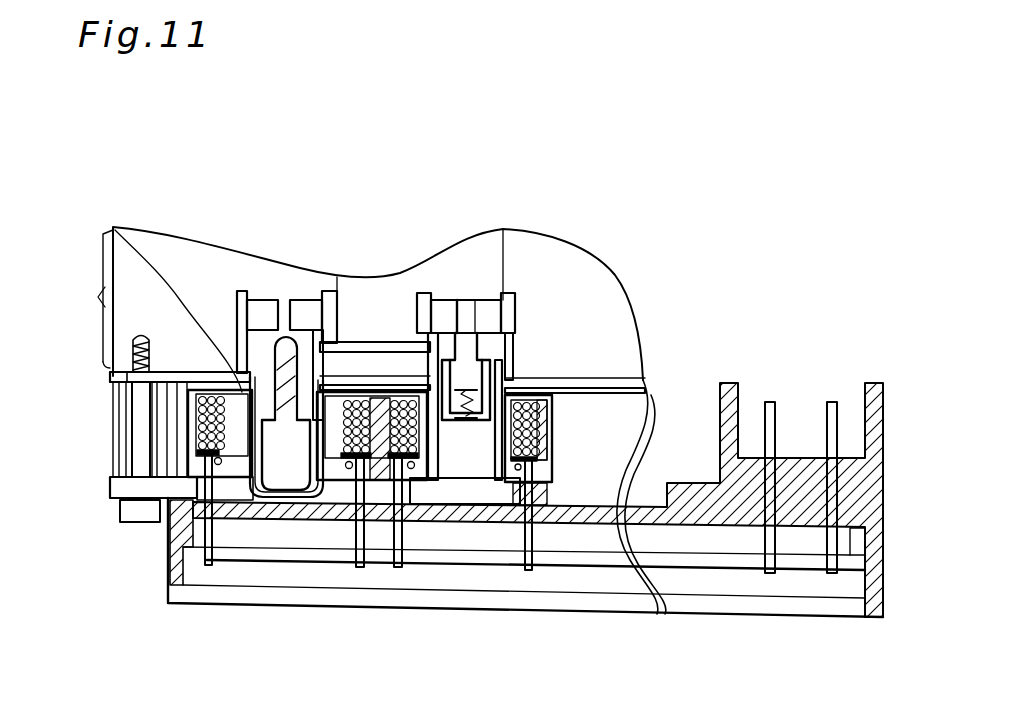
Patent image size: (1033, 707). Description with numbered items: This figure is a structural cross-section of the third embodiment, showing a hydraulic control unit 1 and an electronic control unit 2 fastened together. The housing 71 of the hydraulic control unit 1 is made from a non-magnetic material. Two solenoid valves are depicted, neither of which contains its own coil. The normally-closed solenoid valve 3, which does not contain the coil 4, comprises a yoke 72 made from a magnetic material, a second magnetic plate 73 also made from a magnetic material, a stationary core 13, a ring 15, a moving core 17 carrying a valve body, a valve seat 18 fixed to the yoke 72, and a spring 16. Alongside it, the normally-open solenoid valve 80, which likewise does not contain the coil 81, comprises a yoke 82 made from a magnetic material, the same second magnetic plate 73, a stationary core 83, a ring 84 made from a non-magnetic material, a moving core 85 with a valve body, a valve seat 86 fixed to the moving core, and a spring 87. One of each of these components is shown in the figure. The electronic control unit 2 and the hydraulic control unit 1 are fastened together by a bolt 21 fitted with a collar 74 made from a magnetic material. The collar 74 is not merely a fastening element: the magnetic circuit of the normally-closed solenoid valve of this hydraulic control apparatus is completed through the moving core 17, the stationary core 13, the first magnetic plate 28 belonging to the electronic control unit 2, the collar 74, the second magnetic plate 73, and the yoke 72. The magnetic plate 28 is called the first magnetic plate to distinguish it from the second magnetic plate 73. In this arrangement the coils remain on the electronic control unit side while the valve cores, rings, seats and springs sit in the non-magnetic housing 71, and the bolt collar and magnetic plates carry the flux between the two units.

The hydraulic control unit 1 is at (94, 299).
The electronic control unit 2 is at (887, 513).
The normally-closed solenoid valve 3 is at (457, 287).
The coil 4 is at (541, 445).
The stationary core 13 is at (468, 470).
The ring 15 is at (527, 382).
The spring 16 is at (510, 383).
The moving core 17 is at (478, 365).
The valve seat 18 is at (488, 310).
The bolt 21 is at (138, 513).
The first magnetic plate 28 is at (107, 483).
The housing 71 is at (171, 248).
The yoke 72 is at (427, 293).
The second magnetic plate 73 is at (107, 375).
The collar 74 is at (118, 428).
The normally-open solenoid valve 80 is at (265, 280).
The coil 81 is at (197, 422).
The yoke 82 is at (225, 480).
The stationary core 83 is at (243, 290).
The ring 84 is at (116, 226).
The moving core 85 is at (280, 477).
The valve seat 86 is at (307, 307).
The spring 87 is at (340, 313).